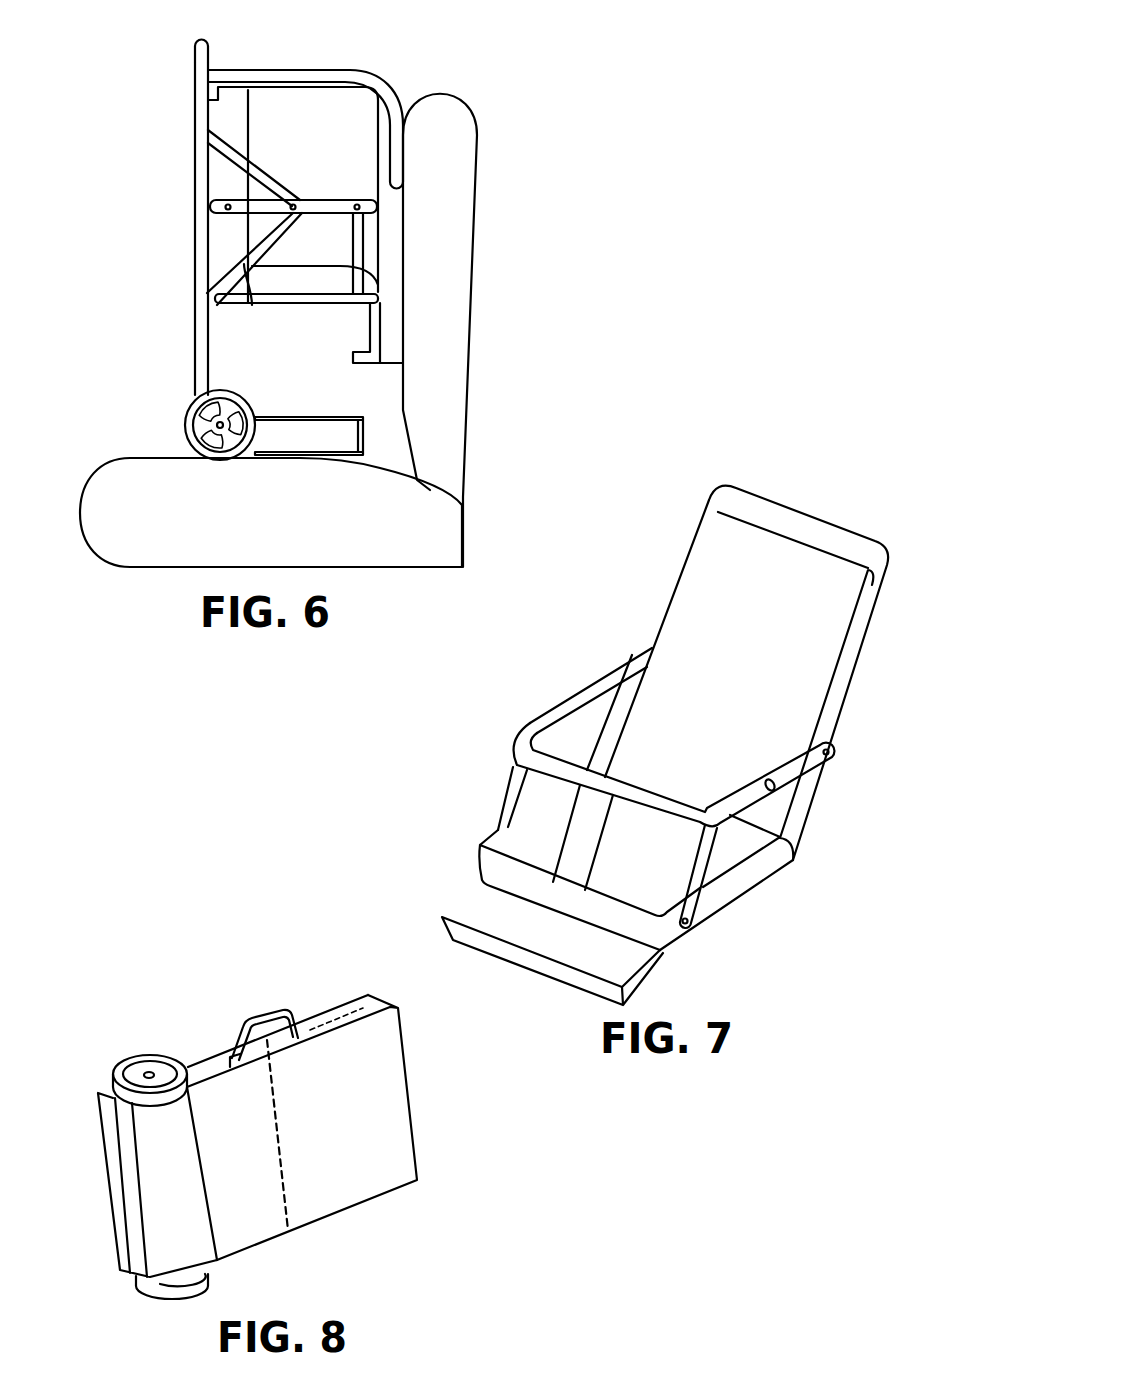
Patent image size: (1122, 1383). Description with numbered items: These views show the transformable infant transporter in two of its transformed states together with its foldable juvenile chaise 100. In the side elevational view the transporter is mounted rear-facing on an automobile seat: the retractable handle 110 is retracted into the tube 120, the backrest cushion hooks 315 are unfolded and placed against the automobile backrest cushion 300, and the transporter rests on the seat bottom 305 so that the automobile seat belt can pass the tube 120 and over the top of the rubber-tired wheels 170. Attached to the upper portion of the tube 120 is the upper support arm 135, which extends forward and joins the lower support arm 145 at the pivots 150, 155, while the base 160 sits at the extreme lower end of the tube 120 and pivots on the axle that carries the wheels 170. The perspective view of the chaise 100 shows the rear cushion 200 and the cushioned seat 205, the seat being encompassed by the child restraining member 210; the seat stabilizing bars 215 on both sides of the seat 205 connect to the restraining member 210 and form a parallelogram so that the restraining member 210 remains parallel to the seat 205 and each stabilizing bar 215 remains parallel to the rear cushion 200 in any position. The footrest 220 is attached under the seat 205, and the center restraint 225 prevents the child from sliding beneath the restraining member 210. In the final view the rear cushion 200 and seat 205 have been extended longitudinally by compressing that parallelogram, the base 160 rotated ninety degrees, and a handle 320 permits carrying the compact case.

In FIG. 7, the foldable juvenile chaise 100 is at (634, 575).
In FIG. 6, the retractable handle 110 is at (198, 48).
In FIG. 6, the tube 120 is at (195, 348).
In FIG. 6, the upper support arm 135 is at (263, 172).
In FIG. 6, the lower support arm 145 is at (252, 305).
In FIG. 7, the pivot 150 is at (777, 786).
In FIG. 7, the pivot 155 is at (590, 682).
In FIG. 6, the base 160 is at (318, 417).
In FIG. 8, the base 160 is at (170, 1195).
In FIG. 6, the rubber-tired wheel 170 is at (187, 417).
In FIG. 8, the rubber-tired wheel 170 is at (137, 1056).
In FIG. 6, the rear cushion 200 is at (237, 132).
In FIG. 7, the rear cushion 200 is at (791, 659).
In FIG. 8, the rear cushion 200 is at (342, 1162).
In FIG. 8, the cushioned seat 205 is at (245, 1207).
In FIG. 7, the child restraining member 210 is at (518, 728).
In FIG. 6, the seat stabilizing bar 215 is at (317, 277).
In FIG. 7, the seat stabilizing bar 215 is at (512, 790).
In FIG. 6, the footrest 220 is at (370, 354).
In FIG. 7, the footrest 220 is at (463, 918).
In FIG. 7, the center restraint 225 is at (572, 829).
In FIG. 6, the automobile backrest cushion 300 is at (461, 300).
In FIG. 6, the stadium seat bottom 305 is at (308, 542).
In FIG. 6, the backrest cushion hook 315 is at (291, 72).
In FIG. 8, the handle 320 is at (262, 1010).